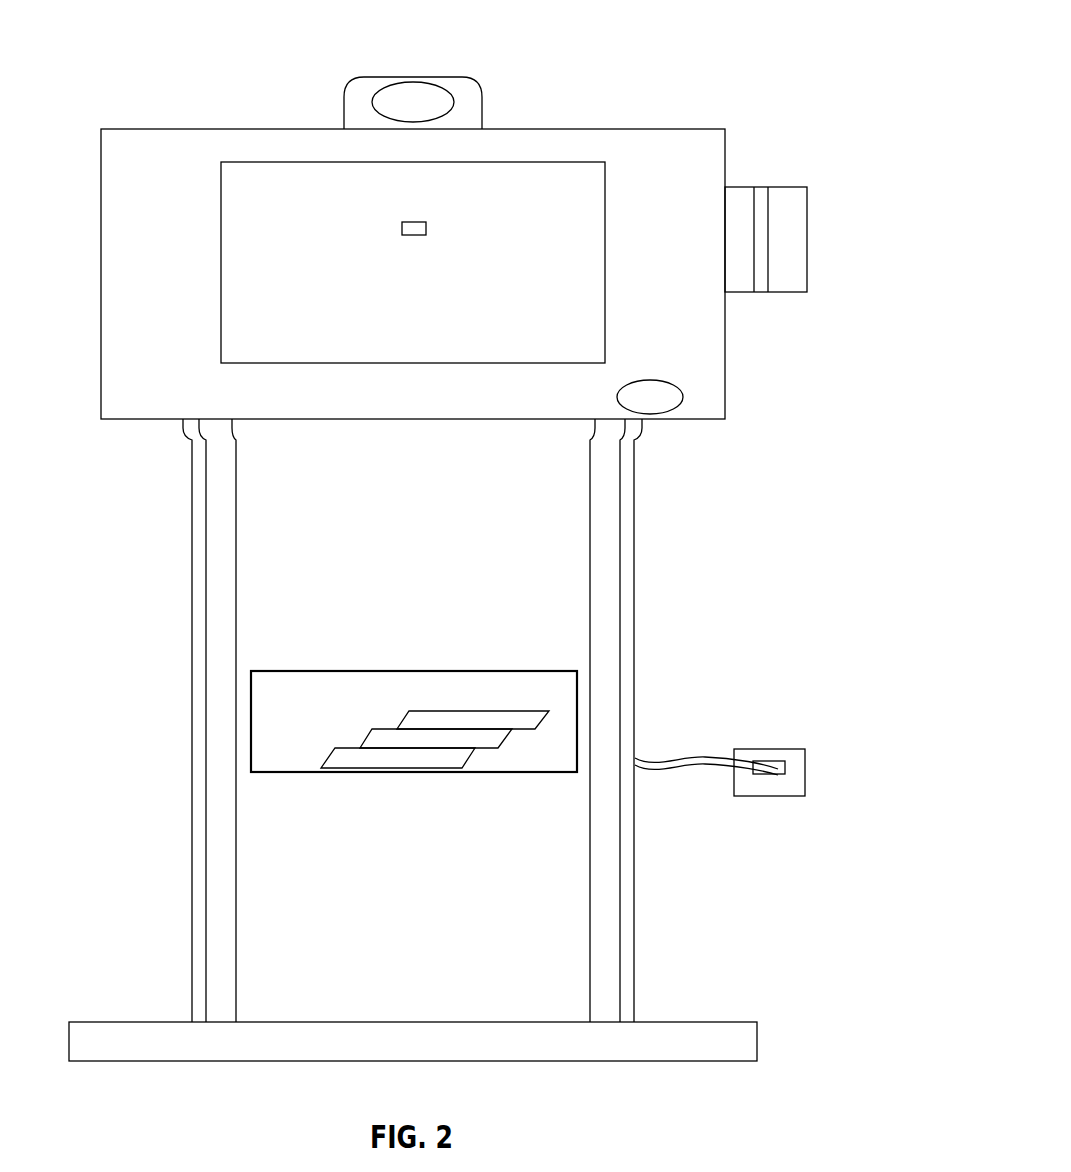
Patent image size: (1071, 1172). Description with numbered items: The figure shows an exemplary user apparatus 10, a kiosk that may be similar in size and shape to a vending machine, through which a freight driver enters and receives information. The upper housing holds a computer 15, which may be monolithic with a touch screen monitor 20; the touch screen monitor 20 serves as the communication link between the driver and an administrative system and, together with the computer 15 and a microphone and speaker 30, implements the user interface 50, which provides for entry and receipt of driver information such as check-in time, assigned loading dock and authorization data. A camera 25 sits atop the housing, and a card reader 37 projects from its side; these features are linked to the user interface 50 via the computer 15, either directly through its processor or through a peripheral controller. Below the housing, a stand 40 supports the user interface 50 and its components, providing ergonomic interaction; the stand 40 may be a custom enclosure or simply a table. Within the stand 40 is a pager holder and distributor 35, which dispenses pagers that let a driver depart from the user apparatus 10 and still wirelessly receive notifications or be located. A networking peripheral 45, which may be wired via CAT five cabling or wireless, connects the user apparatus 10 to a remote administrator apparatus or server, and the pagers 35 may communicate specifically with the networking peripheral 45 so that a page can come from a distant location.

The user apparatus 10 is at (778, 43).
The computer 15 is at (163, 129).
The touch screen monitor 20 is at (606, 315).
The camera 25 is at (416, 77).
The microphone and speaker 30 is at (650, 380).
The pager holder and/or distributor 35 is at (478, 711).
The card reader 37 is at (808, 214).
The stand 40 is at (262, 613).
The networking peripheral 45 is at (668, 763).
The user interface 50 is at (472, 235).